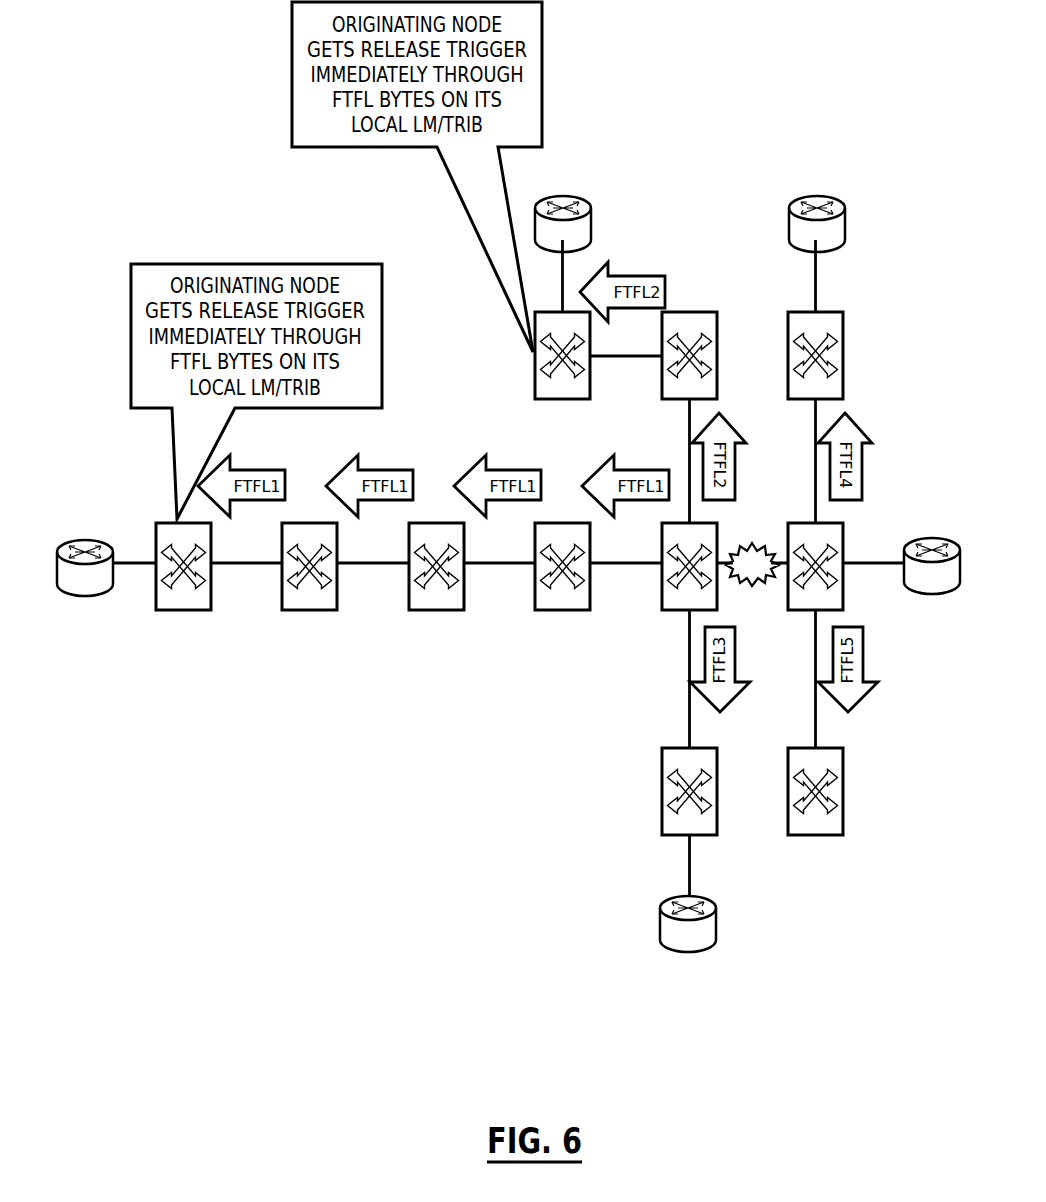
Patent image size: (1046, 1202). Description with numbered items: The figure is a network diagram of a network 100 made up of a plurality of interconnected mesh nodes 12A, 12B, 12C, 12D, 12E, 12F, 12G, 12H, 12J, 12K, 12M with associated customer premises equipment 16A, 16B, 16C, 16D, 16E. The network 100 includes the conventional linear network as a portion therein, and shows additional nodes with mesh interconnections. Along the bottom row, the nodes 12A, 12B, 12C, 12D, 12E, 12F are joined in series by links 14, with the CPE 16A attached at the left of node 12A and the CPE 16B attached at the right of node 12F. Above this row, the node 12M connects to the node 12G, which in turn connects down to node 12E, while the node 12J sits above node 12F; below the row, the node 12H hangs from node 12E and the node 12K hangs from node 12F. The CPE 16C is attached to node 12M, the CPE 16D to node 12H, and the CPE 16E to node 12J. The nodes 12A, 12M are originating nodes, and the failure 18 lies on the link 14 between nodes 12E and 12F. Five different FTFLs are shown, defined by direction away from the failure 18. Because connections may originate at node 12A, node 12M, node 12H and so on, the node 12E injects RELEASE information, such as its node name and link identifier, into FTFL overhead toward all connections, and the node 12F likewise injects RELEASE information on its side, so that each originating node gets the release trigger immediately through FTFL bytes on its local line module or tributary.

The network 100 is at (634, 99).
The node 12A is at (186, 611).
The node 12B is at (312, 611).
The node 12C is at (438, 611).
The node 12D is at (565, 611).
The node 12E is at (673, 612).
The node 12F is at (800, 612).
The node 12G is at (663, 388).
The node 12H is at (662, 825).
The node 12J is at (789, 388).
The node 12K is at (788, 825).
The node 12M is at (537, 388).
The link 14 is at (253, 566).
The customer premises equipment 16A is at (82, 584).
The customer premises equipment 16B is at (925, 584).
The customer premises equipment 16C is at (591, 222).
The customer premises equipment 16D is at (685, 942).
The customer premises equipment 16E is at (845, 225).
The failure 18 is at (757, 543).